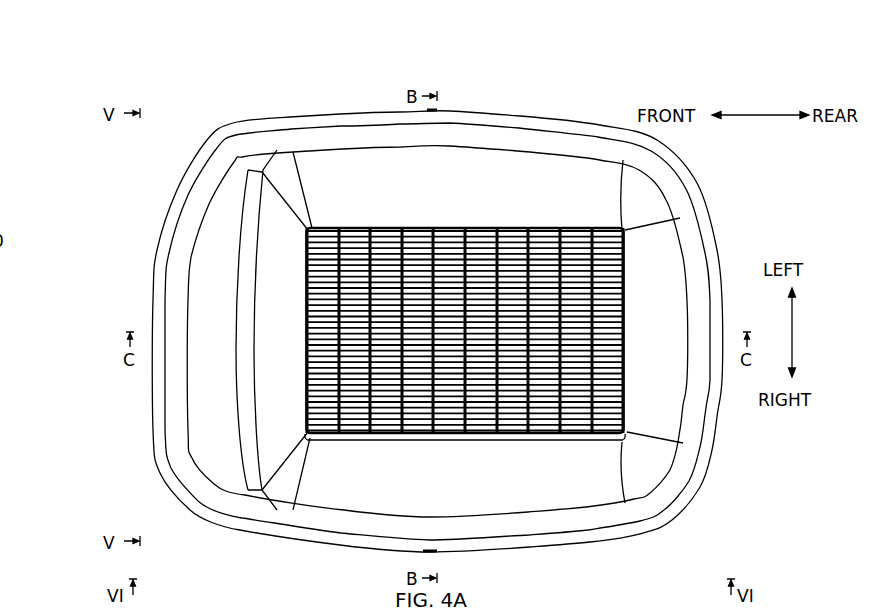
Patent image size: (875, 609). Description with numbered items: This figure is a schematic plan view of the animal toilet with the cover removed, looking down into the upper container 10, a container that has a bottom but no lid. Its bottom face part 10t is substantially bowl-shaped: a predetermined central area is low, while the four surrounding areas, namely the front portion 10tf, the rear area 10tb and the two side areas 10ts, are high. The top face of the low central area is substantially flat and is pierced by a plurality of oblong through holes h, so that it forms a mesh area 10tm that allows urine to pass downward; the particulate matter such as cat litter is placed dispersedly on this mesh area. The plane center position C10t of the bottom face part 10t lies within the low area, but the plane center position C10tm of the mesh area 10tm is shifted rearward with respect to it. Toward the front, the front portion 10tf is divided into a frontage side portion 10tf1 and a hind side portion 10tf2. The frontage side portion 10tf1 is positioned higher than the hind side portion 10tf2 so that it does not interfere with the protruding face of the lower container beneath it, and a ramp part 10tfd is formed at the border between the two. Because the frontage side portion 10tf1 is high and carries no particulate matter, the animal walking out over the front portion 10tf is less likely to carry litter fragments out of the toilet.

The upper container 10 is at (533, 113).
The bottom face part 10t is at (443, 143).
The side surrounding area 10ts is at (563, 183).
The rear surrounding area 10tb is at (657, 255).
The front portion 10tf is at (92, 231).
The frontage side portion 10tf1 is at (222, 268).
The ramp part 10tfd is at (238, 303).
The hind side portion 10tf2 is at (278, 348).
The mesh area 10tm is at (471, 440).
The through hole h is at (382, 223).
The plane center position of the bottom face part C10t is at (442, 328).
The plane center position of the mesh area C10tm is at (473, 325).